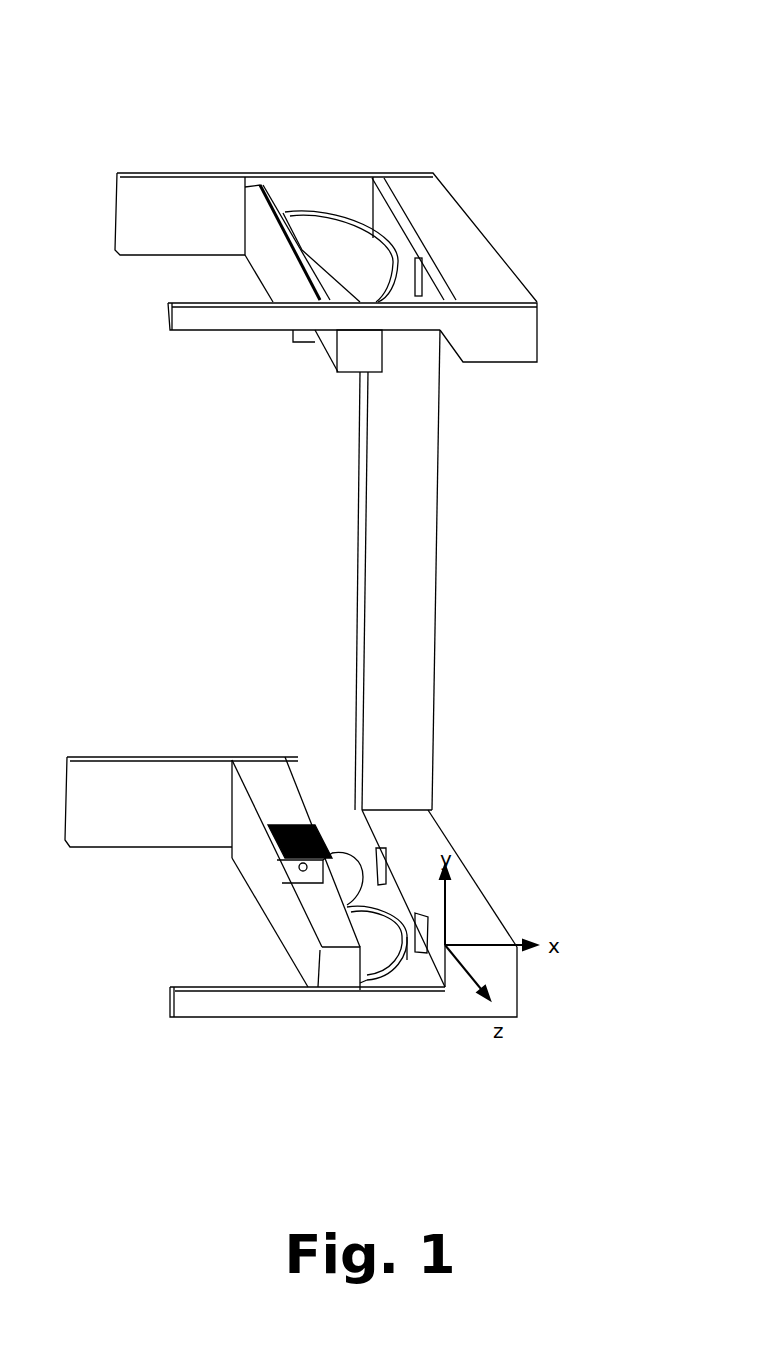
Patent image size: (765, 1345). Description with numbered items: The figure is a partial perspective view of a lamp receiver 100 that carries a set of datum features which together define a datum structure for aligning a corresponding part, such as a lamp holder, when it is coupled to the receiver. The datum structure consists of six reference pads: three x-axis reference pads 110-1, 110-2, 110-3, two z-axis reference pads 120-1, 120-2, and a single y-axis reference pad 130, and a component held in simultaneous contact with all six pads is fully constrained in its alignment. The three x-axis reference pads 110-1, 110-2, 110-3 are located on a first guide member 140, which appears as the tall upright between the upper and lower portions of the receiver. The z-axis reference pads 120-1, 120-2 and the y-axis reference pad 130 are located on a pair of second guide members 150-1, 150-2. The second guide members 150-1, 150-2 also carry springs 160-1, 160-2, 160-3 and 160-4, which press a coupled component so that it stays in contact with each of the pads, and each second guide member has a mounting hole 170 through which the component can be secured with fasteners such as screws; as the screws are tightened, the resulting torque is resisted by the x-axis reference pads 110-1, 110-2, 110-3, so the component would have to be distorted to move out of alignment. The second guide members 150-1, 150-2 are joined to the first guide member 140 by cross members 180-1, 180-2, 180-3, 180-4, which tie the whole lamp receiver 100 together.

The lamp receiver 100 is at (545, 66).
The x-axis reference pad 110-1 is at (423, 920).
The x-axis reference pad 110-2 is at (400, 893).
The x-axis reference pad 110-3 is at (417, 258).
The z-axis reference pad 120-1 is at (283, 873).
The z-axis reference pad 120-2 is at (293, 343).
The y-axis reference pad 130 is at (298, 892).
The first guide member 140 is at (473, 539).
The second guide member 150-1 is at (345, 960).
The second guide member 150-2 is at (357, 372).
The spring 160-1 is at (385, 950).
The spring 160-2 is at (331, 840).
The spring 160-3 is at (370, 238).
The spring 160-4 is at (298, 828).
The mounting hole 170 is at (286, 867).
The cross member 180-1 is at (417, 1000).
The cross member 180-2 is at (303, 773).
The cross member 180-3 is at (425, 330).
The cross member 180-4 is at (281, 211).